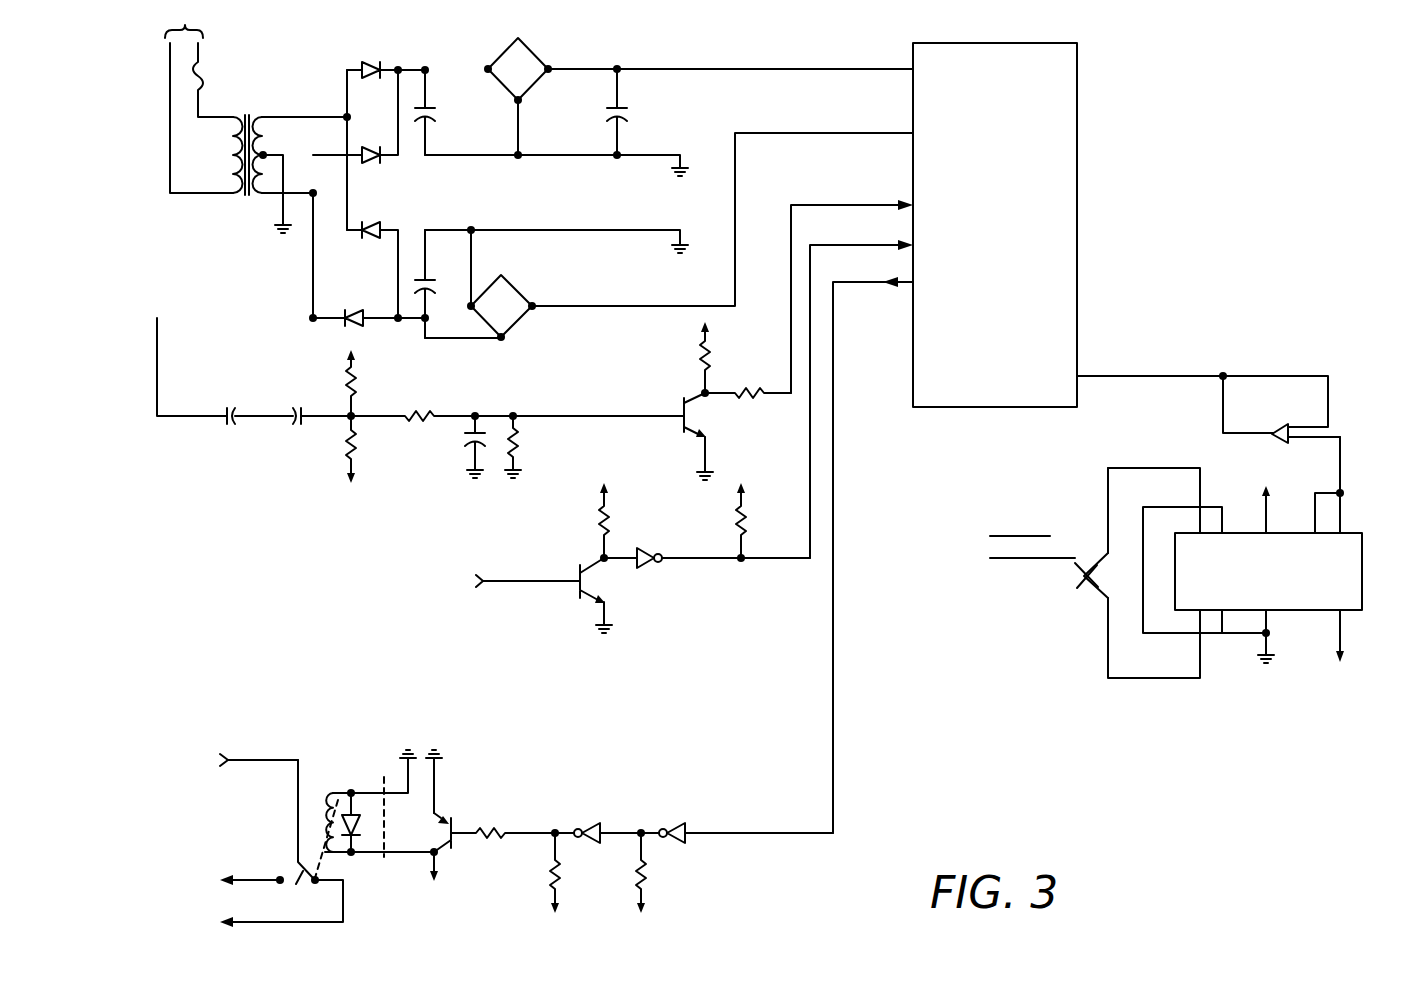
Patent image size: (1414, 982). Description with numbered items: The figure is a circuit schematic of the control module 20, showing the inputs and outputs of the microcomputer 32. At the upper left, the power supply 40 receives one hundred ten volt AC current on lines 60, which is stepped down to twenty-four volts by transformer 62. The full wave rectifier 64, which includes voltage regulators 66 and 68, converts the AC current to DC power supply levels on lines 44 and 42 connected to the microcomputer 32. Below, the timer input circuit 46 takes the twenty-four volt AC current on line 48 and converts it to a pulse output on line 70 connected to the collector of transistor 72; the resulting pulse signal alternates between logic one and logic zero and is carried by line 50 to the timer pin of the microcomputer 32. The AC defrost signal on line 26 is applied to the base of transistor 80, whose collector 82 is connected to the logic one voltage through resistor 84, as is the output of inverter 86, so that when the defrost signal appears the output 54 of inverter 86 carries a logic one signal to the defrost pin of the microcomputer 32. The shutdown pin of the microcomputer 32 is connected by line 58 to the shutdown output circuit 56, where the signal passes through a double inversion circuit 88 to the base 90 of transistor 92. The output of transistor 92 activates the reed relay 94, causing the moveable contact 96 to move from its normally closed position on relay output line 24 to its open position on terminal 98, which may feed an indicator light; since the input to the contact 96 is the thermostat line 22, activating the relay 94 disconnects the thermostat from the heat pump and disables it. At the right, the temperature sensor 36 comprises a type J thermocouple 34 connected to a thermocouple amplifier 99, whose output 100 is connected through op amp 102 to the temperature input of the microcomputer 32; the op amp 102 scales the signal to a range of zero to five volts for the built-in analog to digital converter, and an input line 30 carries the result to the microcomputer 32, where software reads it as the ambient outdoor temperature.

The control module 20 is at (805, 855).
The thermostat line 22 is at (258, 758).
The relay output line 24 is at (253, 925).
The defrost signal line 26 is at (473, 563).
The temperature input line 30 is at (1108, 376).
The microcomputer 32 is at (1078, 73).
The thermocouple 34 is at (1092, 586).
The thermocouple amplifier 36 is at (1348, 409).
The power supply 40 is at (637, 205).
The power supply output line 42 is at (783, 133).
The power supply output line 44 is at (752, 69).
The timer input circuit 46 is at (322, 459).
The 60 hertz line 48 is at (178, 416).
The low voltage timer input 50 is at (791, 250).
The defrost logic input 54 is at (810, 413).
The shutdown relay circuit 56 is at (648, 791).
The shutdown signal line 58 is at (833, 645).
The AC input lines 60 is at (210, 54).
The transformer 62 is at (248, 100).
The full wave rectifier 64 is at (413, 52).
The voltage regulator 66 is at (538, 47).
The voltage regulator 68 is at (520, 281).
The pulse output line 70 is at (718, 393).
The transistor 72 is at (672, 401).
The transistor 80 is at (606, 583).
The collector 82 is at (592, 565).
The resistor 84 is at (608, 512).
The inverter 86 is at (650, 548).
The double inversion circuit 88 is at (593, 856).
The base 90 is at (458, 840).
The transistor 92 is at (446, 772).
The reed relay 94 is at (330, 770).
The moveable contact 96 is at (318, 870).
The terminal 98 is at (247, 878).
The thermocouple amplifier 99 is at (1275, 612).
The amplifier output 100 is at (1340, 463).
The op amp 102 is at (1278, 425).